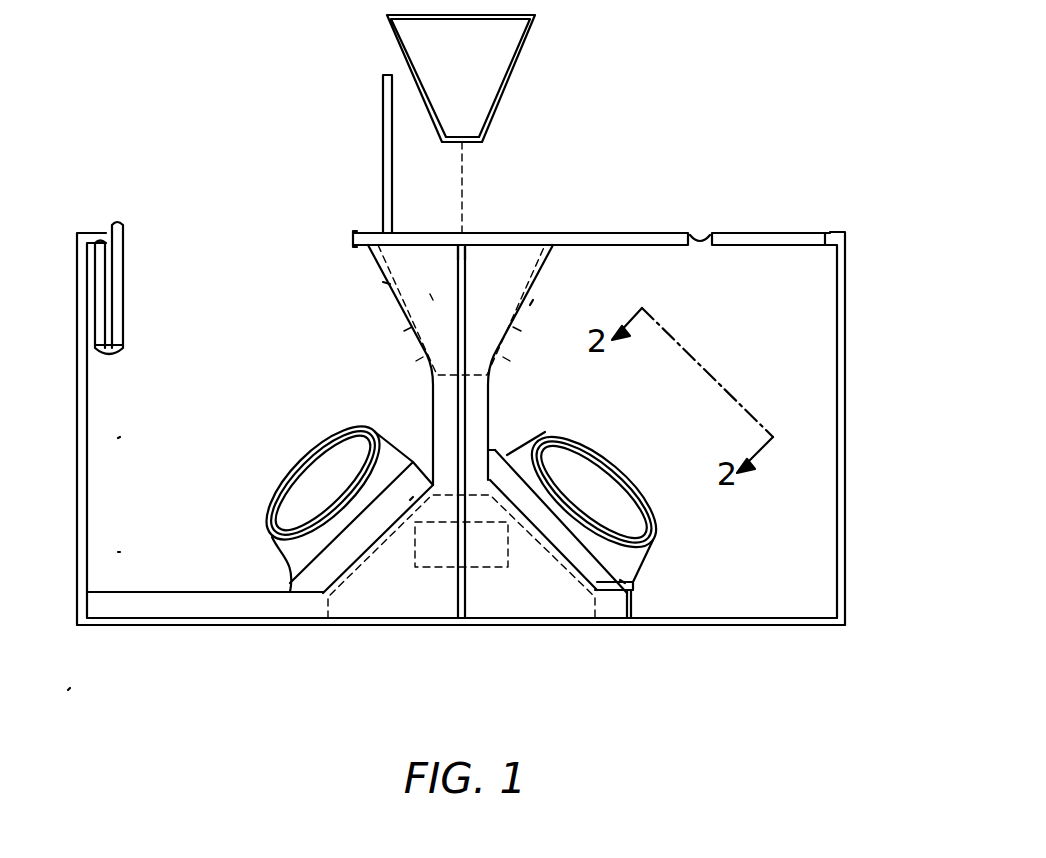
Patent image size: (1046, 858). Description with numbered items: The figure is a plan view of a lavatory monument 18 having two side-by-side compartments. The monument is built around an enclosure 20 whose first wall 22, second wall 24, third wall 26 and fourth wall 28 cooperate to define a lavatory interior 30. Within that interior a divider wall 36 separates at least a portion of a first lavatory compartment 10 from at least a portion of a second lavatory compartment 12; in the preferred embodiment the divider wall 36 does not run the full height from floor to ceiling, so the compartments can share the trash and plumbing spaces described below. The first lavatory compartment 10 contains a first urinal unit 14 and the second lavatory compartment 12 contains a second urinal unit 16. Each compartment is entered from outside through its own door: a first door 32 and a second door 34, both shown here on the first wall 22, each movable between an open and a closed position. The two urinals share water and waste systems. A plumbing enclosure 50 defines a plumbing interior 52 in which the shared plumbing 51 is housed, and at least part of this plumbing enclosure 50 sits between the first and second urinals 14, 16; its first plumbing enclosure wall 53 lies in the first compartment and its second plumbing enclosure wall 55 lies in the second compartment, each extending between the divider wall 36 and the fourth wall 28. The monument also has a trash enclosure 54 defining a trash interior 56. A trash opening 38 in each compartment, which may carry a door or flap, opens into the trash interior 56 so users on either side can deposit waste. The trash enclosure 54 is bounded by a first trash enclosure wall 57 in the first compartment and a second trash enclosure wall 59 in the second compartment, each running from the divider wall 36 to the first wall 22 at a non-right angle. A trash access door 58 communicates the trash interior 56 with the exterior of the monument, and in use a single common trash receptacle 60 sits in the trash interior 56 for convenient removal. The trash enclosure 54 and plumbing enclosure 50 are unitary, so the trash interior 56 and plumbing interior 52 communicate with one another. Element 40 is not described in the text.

The first lavatory compartment 10 is at (120, 437).
The second lavatory compartment 12 is at (466, 438).
The first urinal unit 14 is at (313, 517).
The second urinal unit 16 is at (607, 518).
The lavatory monument 18 is at (72, 685).
The enclosure 20 is at (178, 627).
The first wall 22 is at (531, 233).
The second wall 24 is at (848, 470).
The third wall 26 is at (77, 388).
The fourth wall 28 is at (488, 628).
The lavatory interior 30 is at (126, 552).
The first door 32 is at (766, 232).
The second door 34 is at (125, 254).
The divider wall 36 is at (458, 598).
The trash opening 38 is at (408, 345).
The hopper outer wall 40 is at (400, 272).
The plumbing enclosure 50 is at (550, 592).
The shared plumbing 51 is at (497, 557).
The plumbing interior 52 is at (378, 606).
The first plumbing enclosure wall 53 is at (413, 497).
The trash enclosure 54 is at (488, 258).
The second plumbing enclosure wall 55 is at (622, 580).
The trash interior 56 is at (430, 294).
The first trash enclosure wall 57 is at (383, 282).
The trash access door 58 is at (383, 155).
The second trash enclosure wall 59 is at (533, 300).
The trash receptacle 60 is at (512, 77).